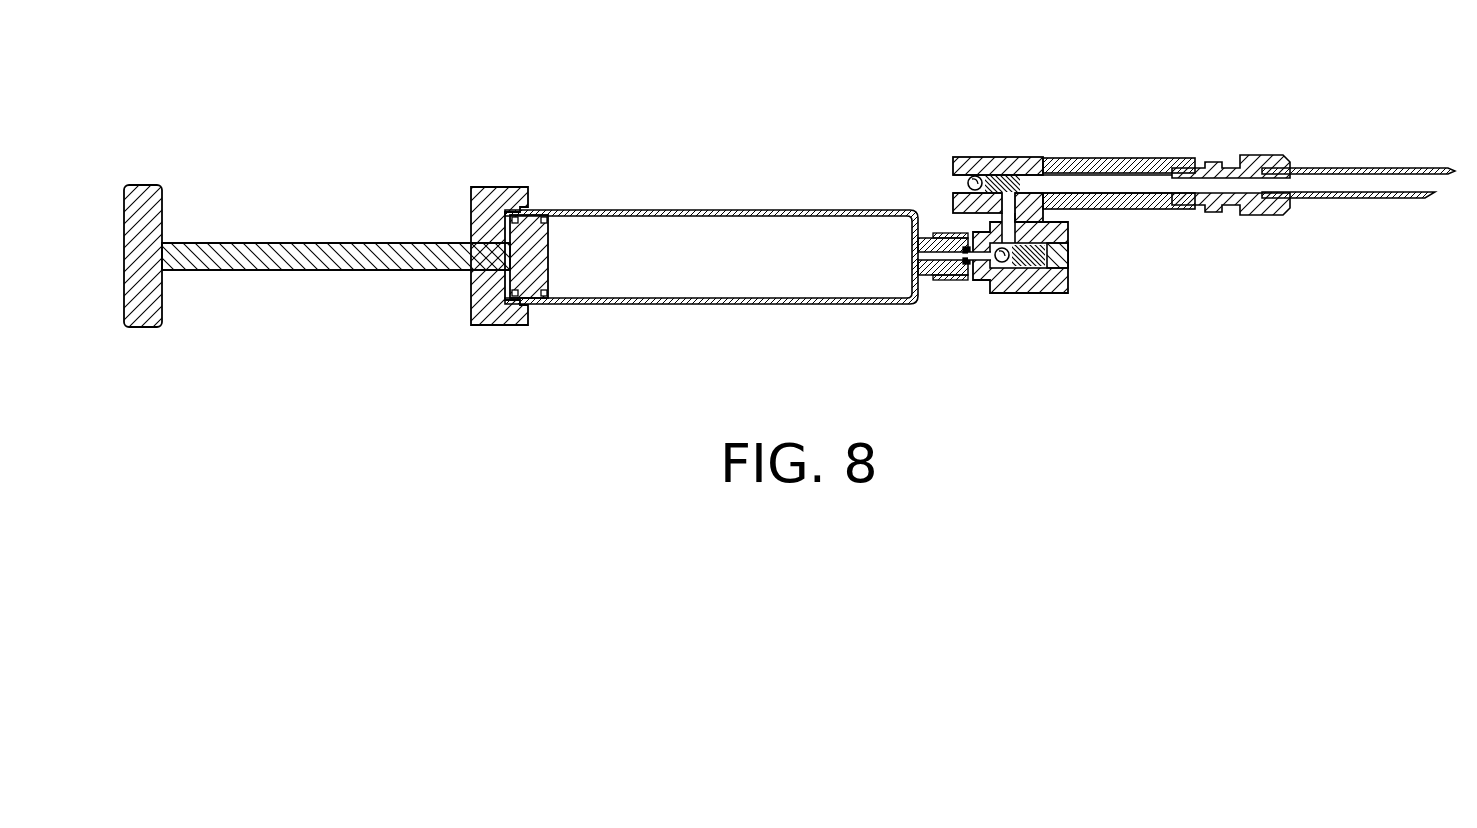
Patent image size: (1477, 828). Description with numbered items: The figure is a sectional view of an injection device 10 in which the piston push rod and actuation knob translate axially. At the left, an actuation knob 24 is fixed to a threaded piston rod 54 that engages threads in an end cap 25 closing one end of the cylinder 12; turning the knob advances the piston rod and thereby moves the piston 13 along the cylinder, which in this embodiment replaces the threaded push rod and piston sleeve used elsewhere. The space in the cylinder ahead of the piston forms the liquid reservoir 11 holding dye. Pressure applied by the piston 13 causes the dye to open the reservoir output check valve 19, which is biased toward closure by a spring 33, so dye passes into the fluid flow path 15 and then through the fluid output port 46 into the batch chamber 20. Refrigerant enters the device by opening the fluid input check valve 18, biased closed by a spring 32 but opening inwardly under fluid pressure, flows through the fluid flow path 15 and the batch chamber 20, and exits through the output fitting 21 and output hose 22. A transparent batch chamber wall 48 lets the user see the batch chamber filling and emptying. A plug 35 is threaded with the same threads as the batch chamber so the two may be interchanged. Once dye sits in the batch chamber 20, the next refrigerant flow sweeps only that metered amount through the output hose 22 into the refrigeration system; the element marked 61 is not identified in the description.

The injection device 10 is at (657, 76).
The liquid reservoir 11 is at (675, 270).
The cylinder 12 is at (650, 210).
The piston 13 is at (533, 277).
The fluid flow path 15 is at (990, 170).
The fluid input check valve 18 is at (967, 170).
The reservoir output check valve 19 is at (1002, 265).
The batch chamber 20 is at (1138, 196).
The output fitting 21 is at (1213, 207).
The output hose 22 is at (1380, 168).
The actuation knob 24 is at (140, 190).
The end cap 25 is at (492, 318).
The spring 32 is at (1010, 170).
The spring 33 is at (1022, 268).
The plug 35 is at (1068, 252).
The fluid output port 46 is at (1045, 187).
The transparent batch chamber wall 48 is at (1128, 163).
The threaded piston rod 54 is at (243, 262).
The outlet valve ball 61 is at (960, 183).